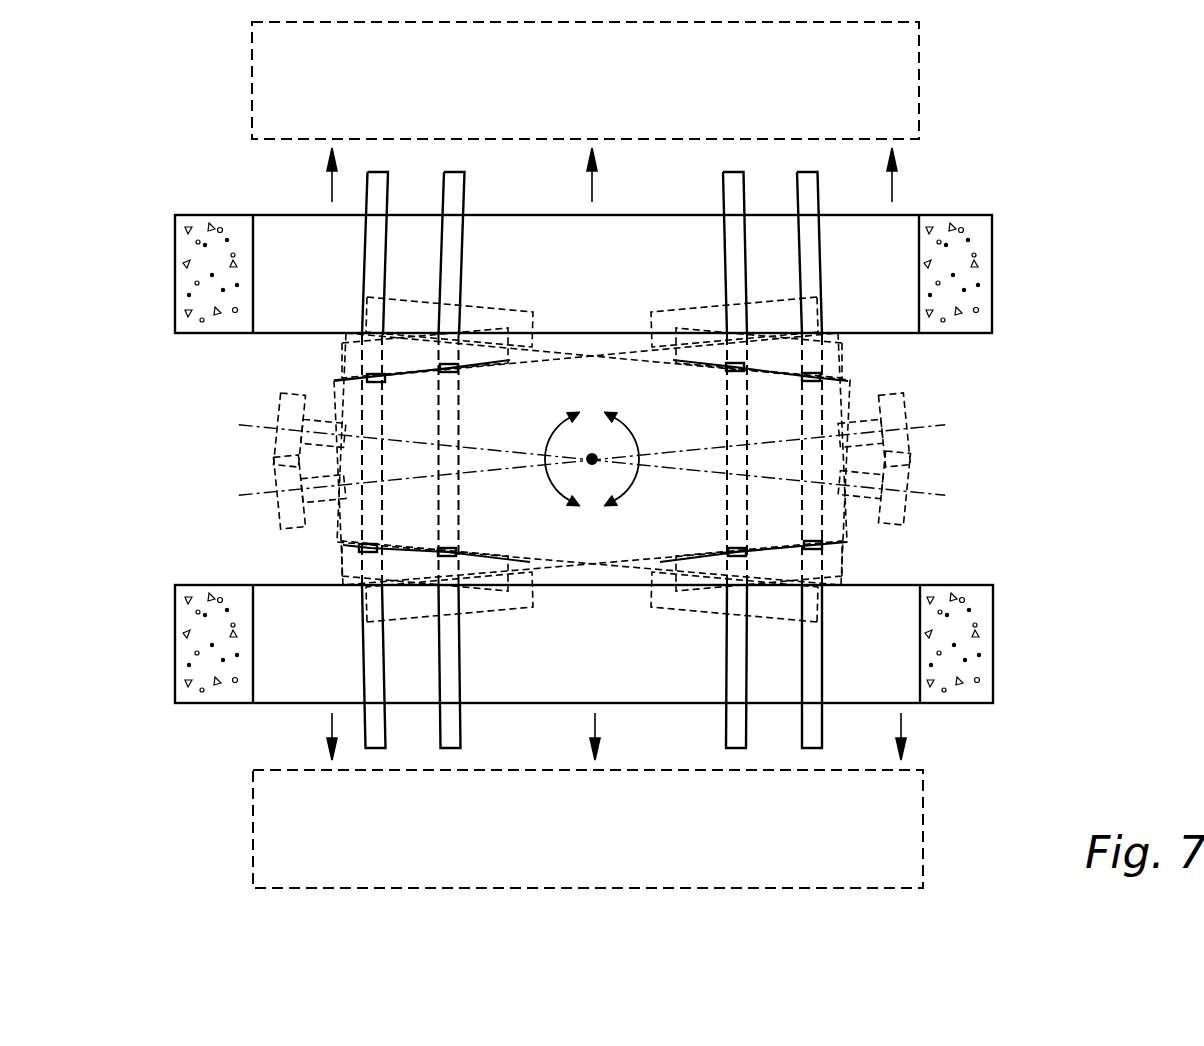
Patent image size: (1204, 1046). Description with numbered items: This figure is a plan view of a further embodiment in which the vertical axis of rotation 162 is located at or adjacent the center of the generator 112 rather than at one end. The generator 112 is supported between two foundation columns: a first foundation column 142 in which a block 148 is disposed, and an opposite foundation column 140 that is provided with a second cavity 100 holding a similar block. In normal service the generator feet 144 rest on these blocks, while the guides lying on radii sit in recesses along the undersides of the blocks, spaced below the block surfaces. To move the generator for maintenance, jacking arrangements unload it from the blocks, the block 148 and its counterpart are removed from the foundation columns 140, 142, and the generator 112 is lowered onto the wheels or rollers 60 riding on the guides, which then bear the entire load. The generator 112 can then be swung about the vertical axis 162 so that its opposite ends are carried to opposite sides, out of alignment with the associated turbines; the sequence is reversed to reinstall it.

The rollers or wheels 60 is at (368, 548).
The cavity 100 is at (918, 240).
The generator 112 is at (627, 350).
The foundation column 140 is at (208, 217).
The first foundation column 142 is at (208, 682).
The generator feet 144 is at (705, 309).
The block 148 is at (268, 67).
The vertical axis of rotation 162 is at (592, 455).